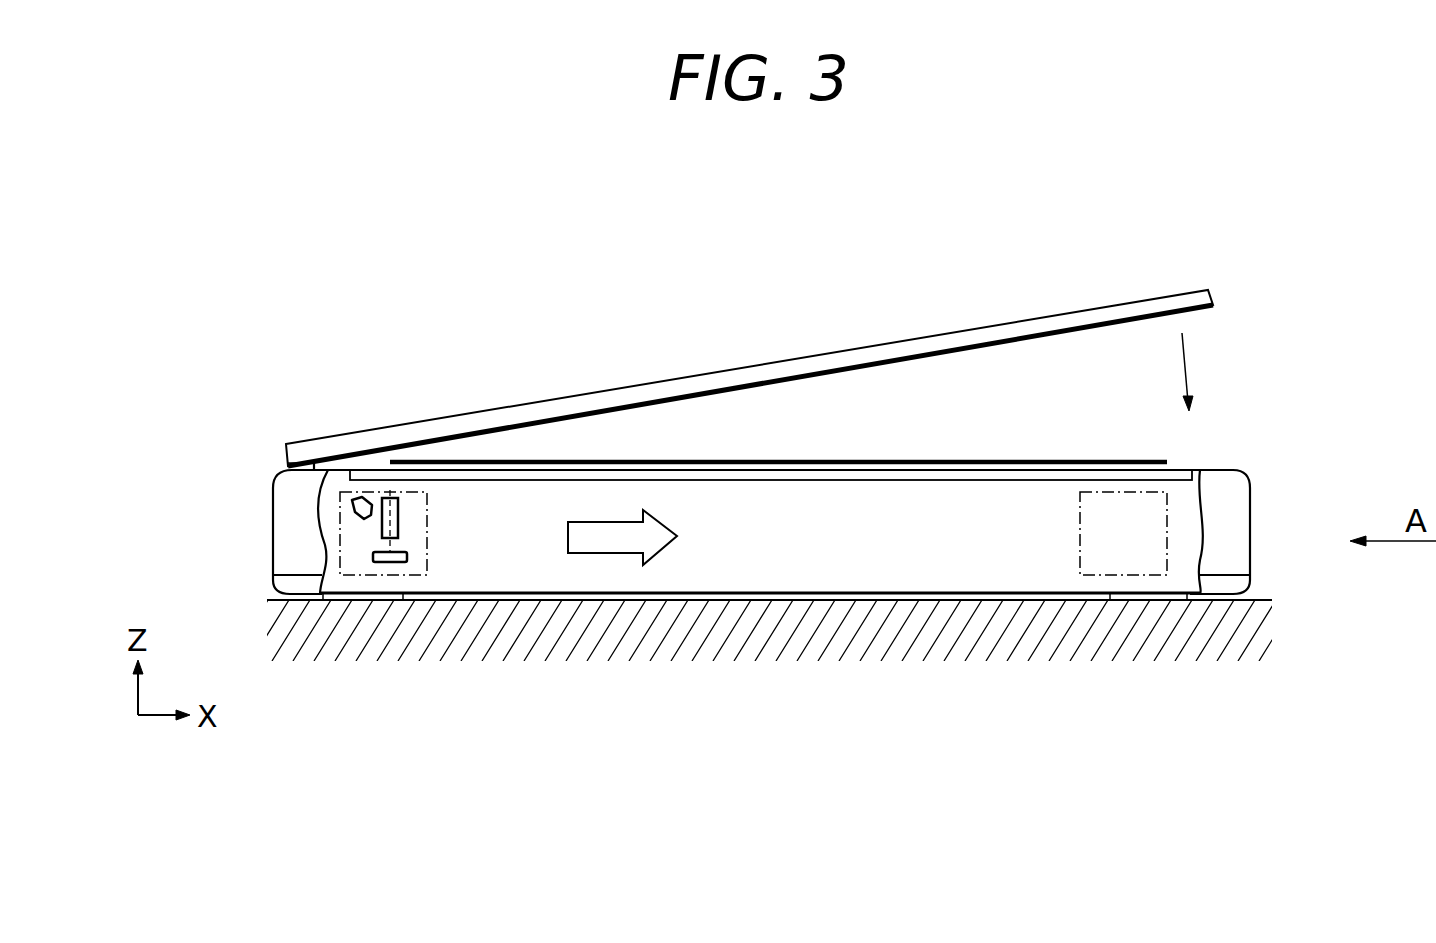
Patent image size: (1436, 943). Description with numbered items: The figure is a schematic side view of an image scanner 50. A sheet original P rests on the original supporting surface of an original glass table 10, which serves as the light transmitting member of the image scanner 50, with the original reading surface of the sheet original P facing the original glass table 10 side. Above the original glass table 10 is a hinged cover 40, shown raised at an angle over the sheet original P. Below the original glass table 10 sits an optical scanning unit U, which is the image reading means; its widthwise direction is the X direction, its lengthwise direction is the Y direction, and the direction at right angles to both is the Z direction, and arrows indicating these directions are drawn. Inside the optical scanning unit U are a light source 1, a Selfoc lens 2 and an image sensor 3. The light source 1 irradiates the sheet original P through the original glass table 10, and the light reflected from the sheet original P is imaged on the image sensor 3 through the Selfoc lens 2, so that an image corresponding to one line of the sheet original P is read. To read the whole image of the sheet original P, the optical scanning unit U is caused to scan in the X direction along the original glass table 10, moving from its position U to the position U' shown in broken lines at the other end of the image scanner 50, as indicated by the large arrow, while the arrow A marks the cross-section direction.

The light source 1 is at (360, 494).
The Selfoc lens 2 is at (398, 518).
The image sensor 3 is at (386, 563).
The original glass table 10 is at (920, 478).
The pressure plate cover 40 is at (1188, 298).
The image scanner 50 is at (1265, 488).
The sheet original P is at (1042, 462).
The optical scanning unit U is at (399, 536).
The optical scanning unit (scanned position) U' is at (1106, 535).